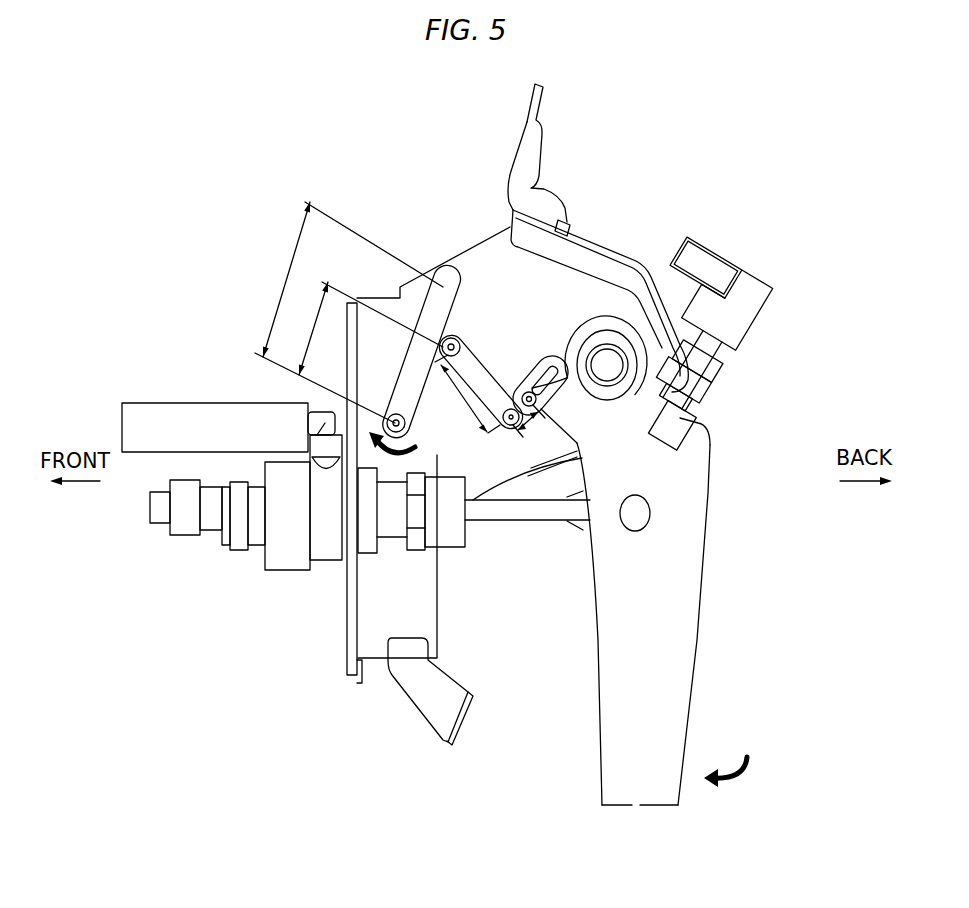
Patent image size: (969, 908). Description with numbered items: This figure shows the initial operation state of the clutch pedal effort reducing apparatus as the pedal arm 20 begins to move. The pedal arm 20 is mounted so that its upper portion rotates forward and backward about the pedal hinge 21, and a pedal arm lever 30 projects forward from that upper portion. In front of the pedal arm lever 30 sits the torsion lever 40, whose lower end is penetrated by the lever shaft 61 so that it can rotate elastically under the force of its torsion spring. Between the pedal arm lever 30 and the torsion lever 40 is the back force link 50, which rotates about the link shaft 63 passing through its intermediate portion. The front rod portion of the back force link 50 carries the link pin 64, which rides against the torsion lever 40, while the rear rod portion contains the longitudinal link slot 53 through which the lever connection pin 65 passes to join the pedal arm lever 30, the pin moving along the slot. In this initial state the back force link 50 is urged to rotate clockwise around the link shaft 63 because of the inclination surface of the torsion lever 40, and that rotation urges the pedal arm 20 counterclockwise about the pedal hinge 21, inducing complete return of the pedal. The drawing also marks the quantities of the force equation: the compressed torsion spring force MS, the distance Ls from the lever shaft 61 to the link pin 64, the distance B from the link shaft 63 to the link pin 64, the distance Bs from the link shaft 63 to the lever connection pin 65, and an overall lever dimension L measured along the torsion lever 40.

The pedal arm 20 is at (677, 643).
The pedal hinge 21 is at (608, 367).
The pedal arm lever 30 is at (553, 410).
The torsion lever 40 is at (443, 288).
The back force link 50 is at (508, 425).
The link slot 53 is at (603, 362).
The lever shaft 61 is at (394, 430).
The link shaft 63 is at (512, 406).
The link pin 64 is at (456, 338).
The lever connection pin 65 is at (548, 375).
The torsion spring force MS is at (403, 455).
The lever length L is at (349, 312).
The distance between lever shaft center and link pin center Ls is at (363, 328).
The distance between link shaft center and link pin center B is at (467, 394).
The distance between link shaft center and lever connection pin center Bs is at (538, 436).